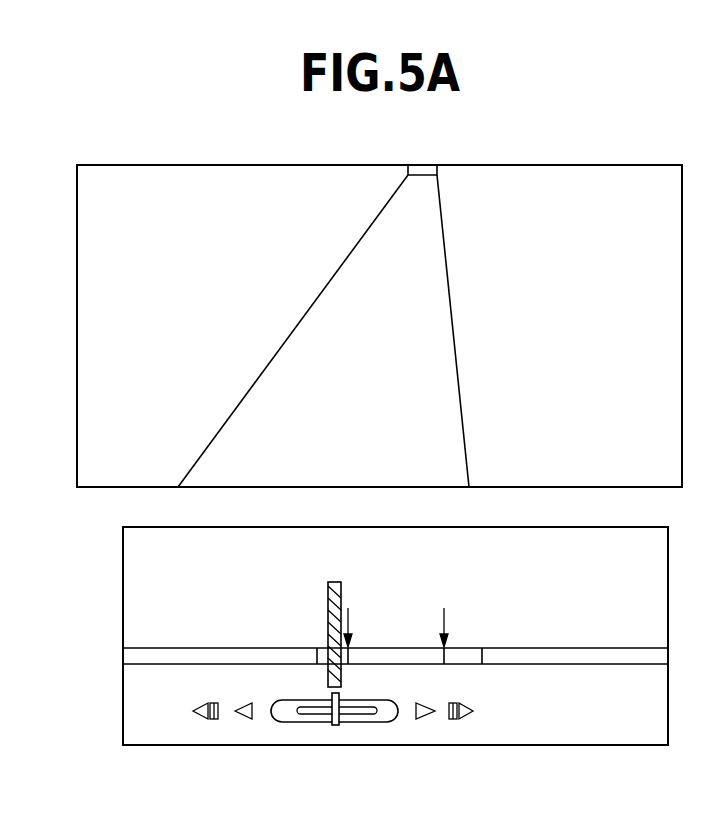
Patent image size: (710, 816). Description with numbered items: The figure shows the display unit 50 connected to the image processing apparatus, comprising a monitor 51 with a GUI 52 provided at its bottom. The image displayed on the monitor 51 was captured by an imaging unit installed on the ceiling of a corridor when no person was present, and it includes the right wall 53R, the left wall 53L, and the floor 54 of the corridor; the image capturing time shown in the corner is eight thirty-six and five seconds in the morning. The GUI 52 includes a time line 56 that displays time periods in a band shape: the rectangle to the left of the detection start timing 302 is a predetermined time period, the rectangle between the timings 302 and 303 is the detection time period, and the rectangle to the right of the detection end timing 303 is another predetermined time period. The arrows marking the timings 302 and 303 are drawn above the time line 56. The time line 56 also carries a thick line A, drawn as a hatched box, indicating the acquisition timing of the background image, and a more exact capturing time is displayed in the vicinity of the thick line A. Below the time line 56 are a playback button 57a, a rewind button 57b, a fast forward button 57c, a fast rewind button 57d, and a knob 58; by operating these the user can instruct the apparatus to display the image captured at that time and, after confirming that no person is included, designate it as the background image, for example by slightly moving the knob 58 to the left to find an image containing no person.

The display unit 50 is at (521, 146).
The monitor 51 is at (188, 165).
The GUI 52 is at (123, 576).
The left wall 53L is at (137, 378).
The right wall 53R is at (553, 378).
The floor 54 is at (338, 432).
The time line 56 is at (123, 657).
The playback button 57a is at (425, 721).
The rewind button 57b is at (243, 721).
The fast forward button 57c is at (468, 721).
The fast rewind button 57d is at (200, 719).
The knob 58 is at (336, 728).
The detection start timing 302 is at (351, 616).
The detection end timing 303 is at (448, 615).
The thick line A is at (328, 605).